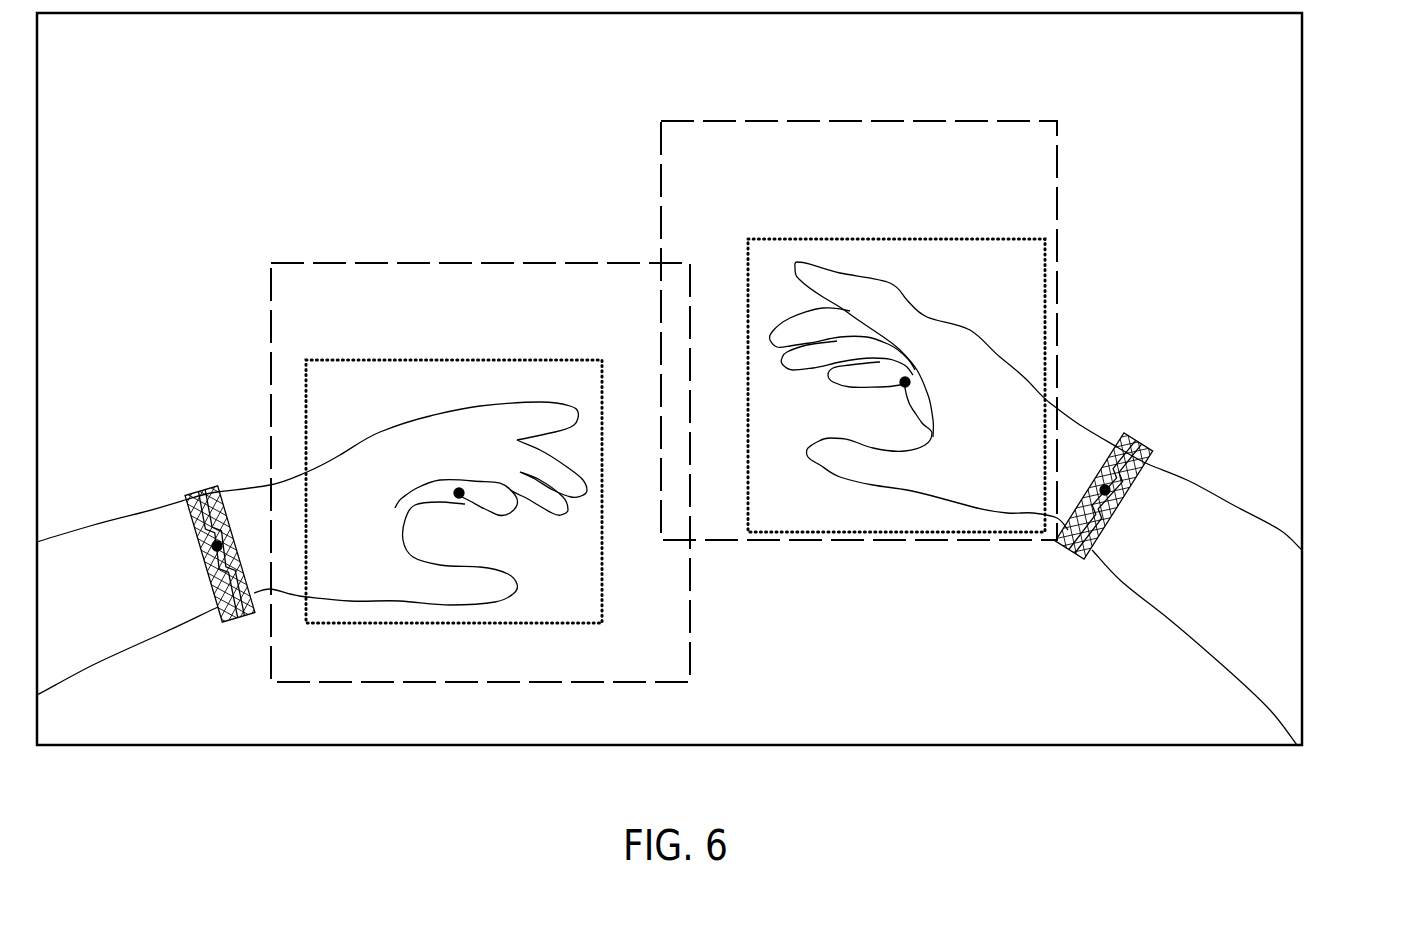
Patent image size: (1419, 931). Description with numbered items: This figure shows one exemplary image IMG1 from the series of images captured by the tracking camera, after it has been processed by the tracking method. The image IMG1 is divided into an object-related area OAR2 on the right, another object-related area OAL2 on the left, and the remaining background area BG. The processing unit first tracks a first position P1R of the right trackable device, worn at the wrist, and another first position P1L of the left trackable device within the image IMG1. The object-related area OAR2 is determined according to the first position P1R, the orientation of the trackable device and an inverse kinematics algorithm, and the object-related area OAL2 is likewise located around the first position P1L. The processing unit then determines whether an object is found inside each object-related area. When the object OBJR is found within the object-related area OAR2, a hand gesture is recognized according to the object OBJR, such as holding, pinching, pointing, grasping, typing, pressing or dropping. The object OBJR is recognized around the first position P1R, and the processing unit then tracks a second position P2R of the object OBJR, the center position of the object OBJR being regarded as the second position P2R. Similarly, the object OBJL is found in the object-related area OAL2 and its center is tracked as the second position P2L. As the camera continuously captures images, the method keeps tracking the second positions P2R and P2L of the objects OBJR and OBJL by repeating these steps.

The image IMG1 is at (1302, 80).
The background area BG is at (253, 122).
The object-related area OAL2 is at (395, 263).
The object OBJL is at (493, 360).
The second position P2L is at (459, 493).
The first position P1L is at (217, 546).
The object-related area OAR2 is at (953, 121).
The object OBJR is at (1025, 239).
The second position P2R is at (905, 382).
The first position P1R is at (1105, 490).